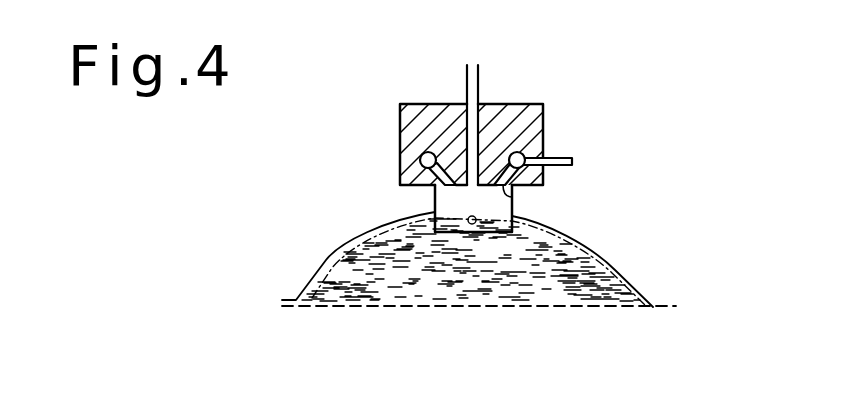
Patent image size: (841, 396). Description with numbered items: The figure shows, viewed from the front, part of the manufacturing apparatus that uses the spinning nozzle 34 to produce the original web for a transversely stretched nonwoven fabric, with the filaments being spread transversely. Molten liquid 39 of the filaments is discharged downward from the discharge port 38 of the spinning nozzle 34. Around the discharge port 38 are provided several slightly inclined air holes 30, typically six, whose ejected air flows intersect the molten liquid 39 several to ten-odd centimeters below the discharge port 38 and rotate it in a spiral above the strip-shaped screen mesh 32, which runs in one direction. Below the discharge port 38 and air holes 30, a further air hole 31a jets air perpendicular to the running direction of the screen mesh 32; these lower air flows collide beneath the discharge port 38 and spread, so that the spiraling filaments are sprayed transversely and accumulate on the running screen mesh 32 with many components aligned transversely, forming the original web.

The air holes 30 is at (480, 191).
The air hole 31a is at (512, 214).
The screen mesh 32 is at (489, 304).
The spinning nozzle 34 is at (565, 128).
The discharge port 38 is at (479, 97).
The molten liquid 39 is at (435, 200).